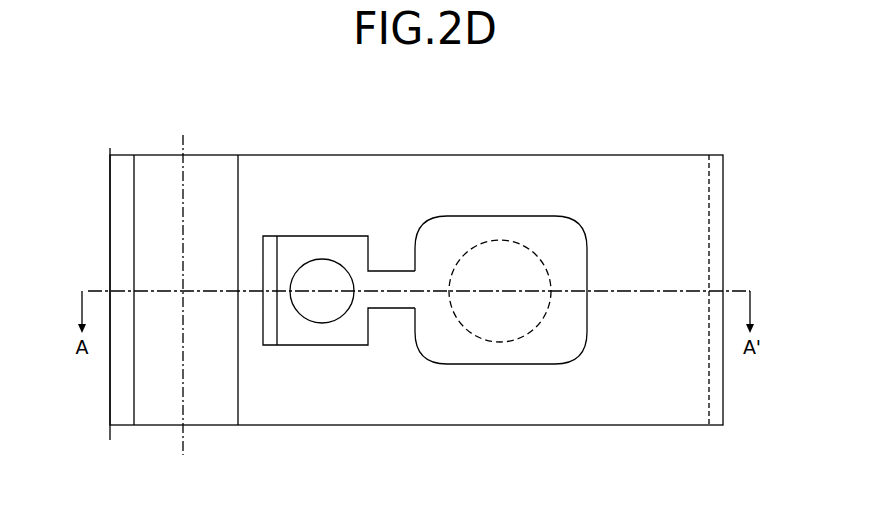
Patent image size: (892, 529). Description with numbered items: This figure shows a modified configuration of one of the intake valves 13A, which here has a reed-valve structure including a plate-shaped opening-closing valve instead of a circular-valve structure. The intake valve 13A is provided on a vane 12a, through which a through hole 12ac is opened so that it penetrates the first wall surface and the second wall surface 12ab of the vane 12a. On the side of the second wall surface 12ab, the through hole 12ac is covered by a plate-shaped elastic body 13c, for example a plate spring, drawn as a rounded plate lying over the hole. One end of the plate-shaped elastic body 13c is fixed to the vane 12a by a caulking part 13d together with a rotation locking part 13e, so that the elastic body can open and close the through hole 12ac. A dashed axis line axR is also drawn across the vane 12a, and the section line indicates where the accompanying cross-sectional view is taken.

The vane 12a is at (611, 140).
The second wall surface 12ab is at (697, 203).
The through hole 12ac is at (523, 257).
The intake valve 13A is at (419, 282).
The plate-shaped elastic body 13c is at (497, 365).
The caulking part 13d is at (318, 335).
The rotation locking part 13e is at (271, 313).
The axis of rotation axR is at (183, 284).